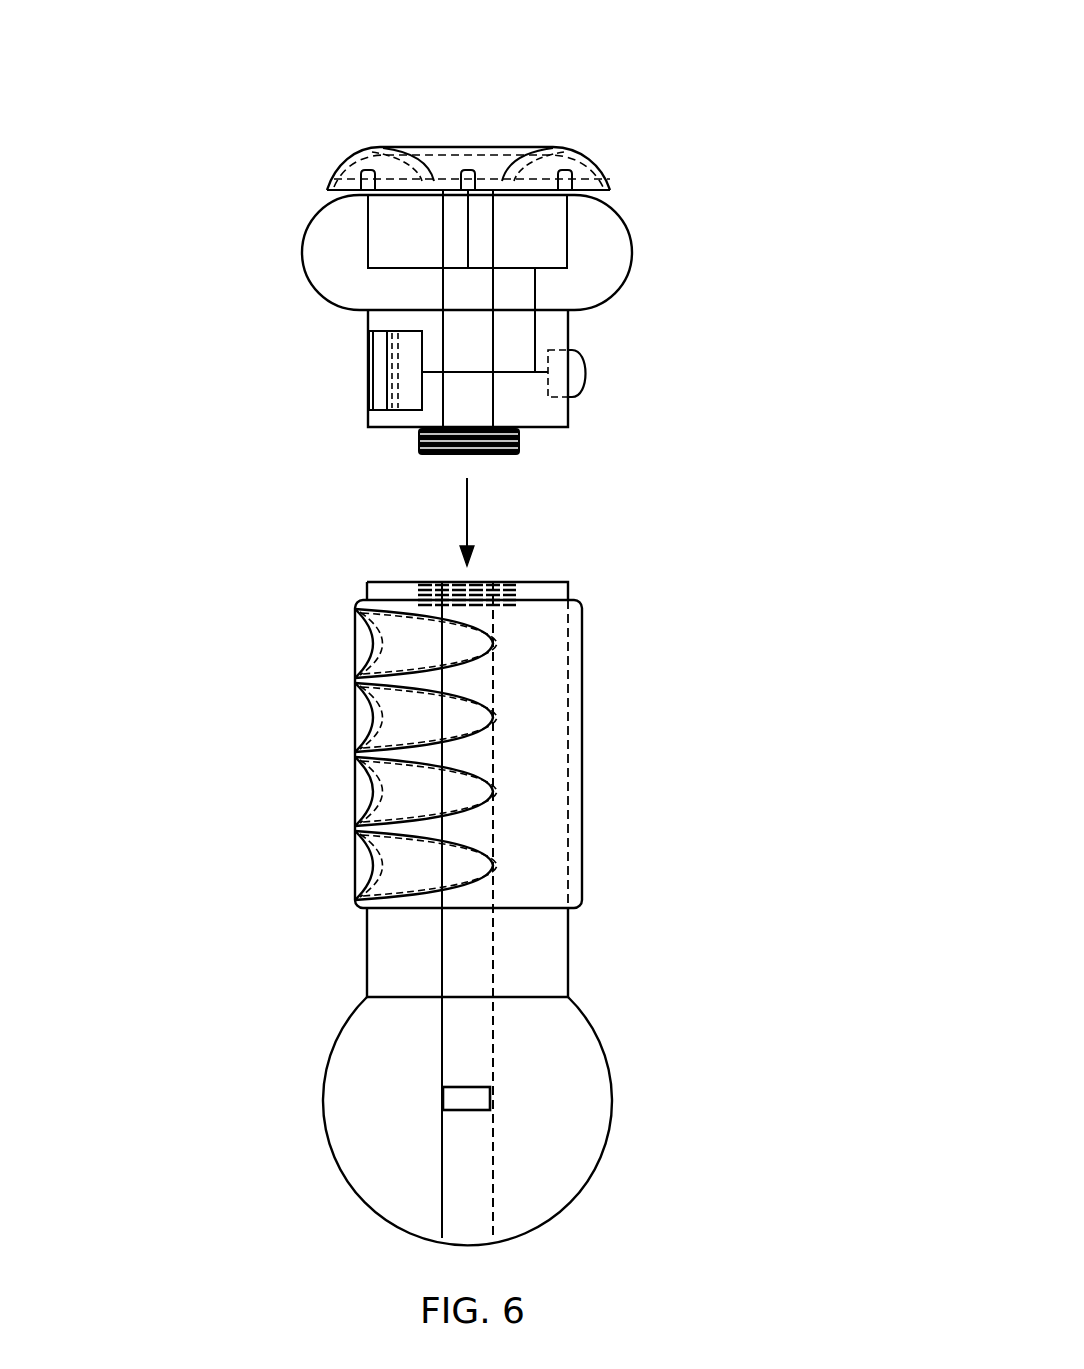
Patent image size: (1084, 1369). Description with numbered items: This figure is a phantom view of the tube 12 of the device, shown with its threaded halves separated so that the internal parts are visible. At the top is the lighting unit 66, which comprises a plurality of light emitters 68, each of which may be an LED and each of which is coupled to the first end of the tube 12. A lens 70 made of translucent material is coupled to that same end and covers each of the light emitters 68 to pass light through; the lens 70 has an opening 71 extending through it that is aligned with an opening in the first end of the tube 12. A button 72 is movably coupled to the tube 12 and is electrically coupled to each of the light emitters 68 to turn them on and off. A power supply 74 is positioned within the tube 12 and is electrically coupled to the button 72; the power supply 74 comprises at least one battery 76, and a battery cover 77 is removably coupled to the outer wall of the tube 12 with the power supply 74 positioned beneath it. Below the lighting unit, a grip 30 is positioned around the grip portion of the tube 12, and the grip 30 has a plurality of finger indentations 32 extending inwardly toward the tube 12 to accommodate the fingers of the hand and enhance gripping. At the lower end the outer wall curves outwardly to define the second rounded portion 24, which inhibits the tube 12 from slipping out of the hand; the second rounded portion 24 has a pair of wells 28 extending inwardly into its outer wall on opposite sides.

The tube 12 is at (668, 793).
The second rounded portion 24 is at (574, 1132).
The well 28 is at (473, 1087).
The grip 30 is at (582, 642).
The finger indentation 32 is at (333, 863).
The lighting unit 66 is at (363, 98).
The light emitter 68 is at (363, 148).
The lens 70 is at (551, 147).
The opening 71 is at (453, 160).
The button 72 is at (588, 377).
The power supply 74 is at (407, 330).
The battery 76 is at (405, 412).
The battery cover 77 is at (368, 370).